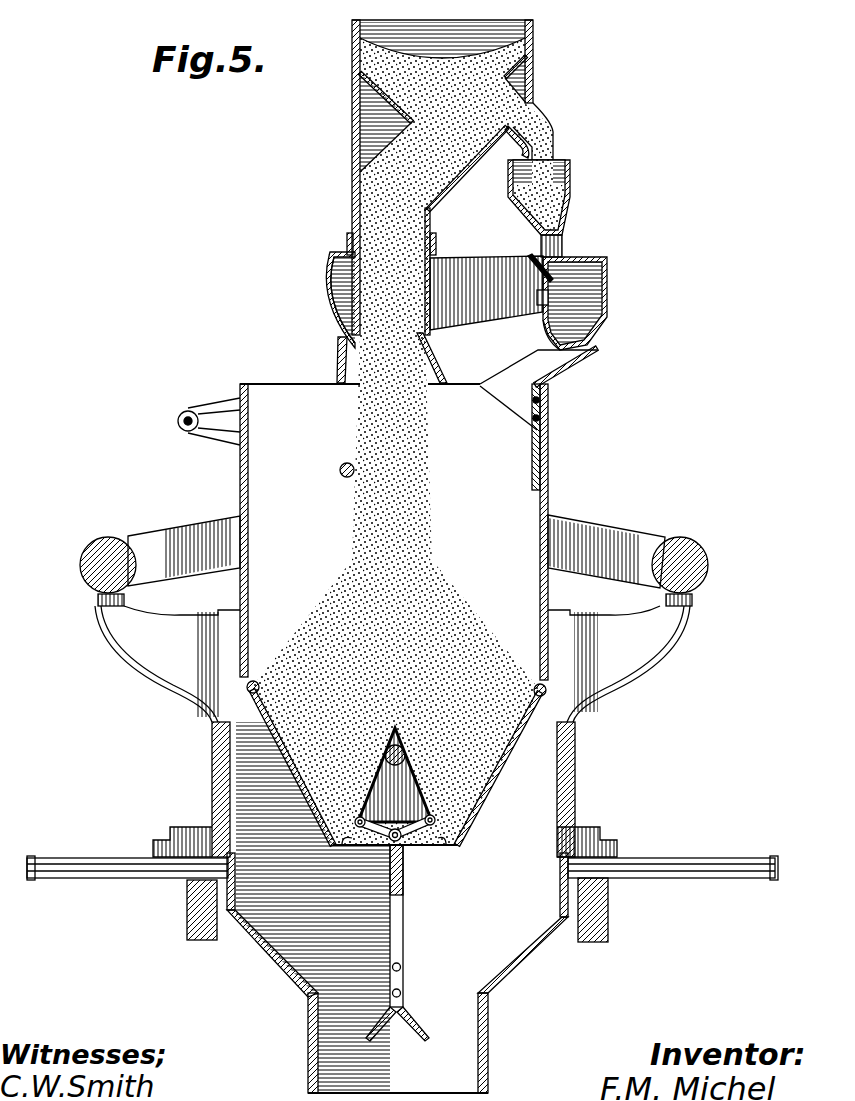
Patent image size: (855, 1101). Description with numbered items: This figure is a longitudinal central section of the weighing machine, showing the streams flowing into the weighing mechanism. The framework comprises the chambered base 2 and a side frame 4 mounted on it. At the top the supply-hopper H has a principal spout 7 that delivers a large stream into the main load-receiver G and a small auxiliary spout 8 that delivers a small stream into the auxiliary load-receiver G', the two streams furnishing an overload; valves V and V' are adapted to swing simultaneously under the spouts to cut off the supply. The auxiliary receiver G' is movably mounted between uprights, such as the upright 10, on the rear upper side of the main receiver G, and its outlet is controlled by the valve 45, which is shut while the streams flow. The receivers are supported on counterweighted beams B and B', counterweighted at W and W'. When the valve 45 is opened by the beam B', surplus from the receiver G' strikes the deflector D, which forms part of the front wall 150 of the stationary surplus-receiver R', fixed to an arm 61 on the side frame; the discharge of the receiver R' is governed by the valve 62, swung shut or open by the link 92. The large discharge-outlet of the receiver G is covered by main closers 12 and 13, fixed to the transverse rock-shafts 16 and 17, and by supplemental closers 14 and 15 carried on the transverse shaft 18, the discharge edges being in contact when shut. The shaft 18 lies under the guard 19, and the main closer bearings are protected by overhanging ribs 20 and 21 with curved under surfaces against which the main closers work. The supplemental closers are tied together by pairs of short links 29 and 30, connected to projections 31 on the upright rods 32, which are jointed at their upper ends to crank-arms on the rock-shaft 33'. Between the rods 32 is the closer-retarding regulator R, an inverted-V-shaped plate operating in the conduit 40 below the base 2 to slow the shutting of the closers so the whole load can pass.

The supply-hopper H is at (533, 47).
The auxiliary spout 8 is at (557, 140).
The valve V' is at (504, 150).
The auxiliary load-receiver G' is at (556, 197).
The valve 45 is at (560, 240).
The surplus-receiver R' is at (591, 303).
The deflector D is at (530, 261).
The front wall 150 is at (537, 297).
The valve 62 is at (543, 330).
The arm 61 is at (488, 248).
The valve V is at (320, 300).
The principal spout 7 is at (350, 288).
The side frame 4 is at (337, 362).
The main load-receiver G is at (418, 515).
The link 92 is at (590, 356).
The upright 10 is at (556, 406).
The rock-shaft 33' is at (326, 477).
The beam B is at (169, 560).
The counterweight W is at (101, 559).
The beam B' is at (620, 560).
The counterweight W' is at (693, 557).
The rock-shaft 16 is at (248, 690).
The rock-shaft 17 is at (580, 700).
The base 2 is at (212, 756).
The conduit 40 is at (488, 1050).
The main closer 12 is at (292, 778).
The main closer 13 is at (500, 775).
The overhanging rib 20 is at (256, 682).
The overhanging rib 21 is at (538, 684).
The guard 19 is at (408, 735).
The transverse shaft 18 is at (384, 744).
The link 29 is at (373, 840).
The link 30 is at (418, 840).
The supplemental closer 14 is at (349, 847).
The supplemental closer 15 is at (444, 848).
The projection 31 is at (390, 872).
The upright rod 32 is at (403, 928).
The closer-retarding regulator R is at (401, 1016).